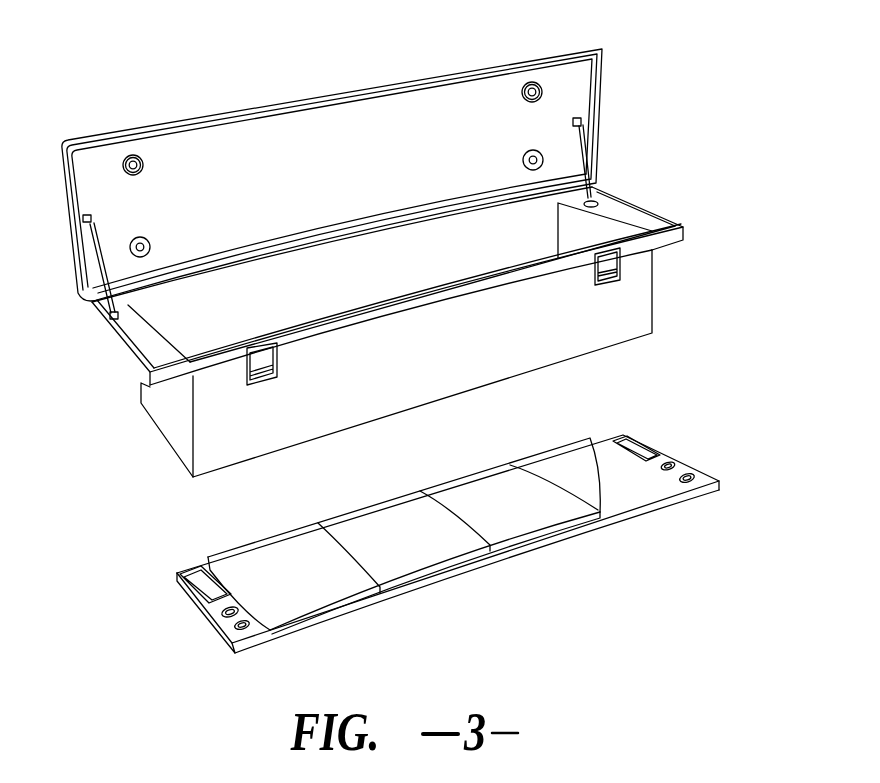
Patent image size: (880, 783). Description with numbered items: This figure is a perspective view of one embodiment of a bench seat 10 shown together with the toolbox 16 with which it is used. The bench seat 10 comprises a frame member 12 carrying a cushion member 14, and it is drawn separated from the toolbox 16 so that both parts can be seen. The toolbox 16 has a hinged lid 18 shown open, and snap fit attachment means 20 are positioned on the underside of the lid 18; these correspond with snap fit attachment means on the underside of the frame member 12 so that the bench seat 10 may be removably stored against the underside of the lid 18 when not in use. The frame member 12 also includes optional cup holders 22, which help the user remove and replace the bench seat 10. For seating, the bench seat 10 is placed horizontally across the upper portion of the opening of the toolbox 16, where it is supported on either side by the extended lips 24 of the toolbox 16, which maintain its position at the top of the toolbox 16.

The bench seat 10 is at (527, 577).
The frame member 12 is at (643, 508).
The cushion member 14 is at (480, 488).
The toolbox 16 is at (597, 325).
The lid 18 is at (323, 128).
The snap fit attachment means 20 is at (147, 240).
The cup holders 22 is at (222, 614).
The extended lips 24 is at (123, 342).